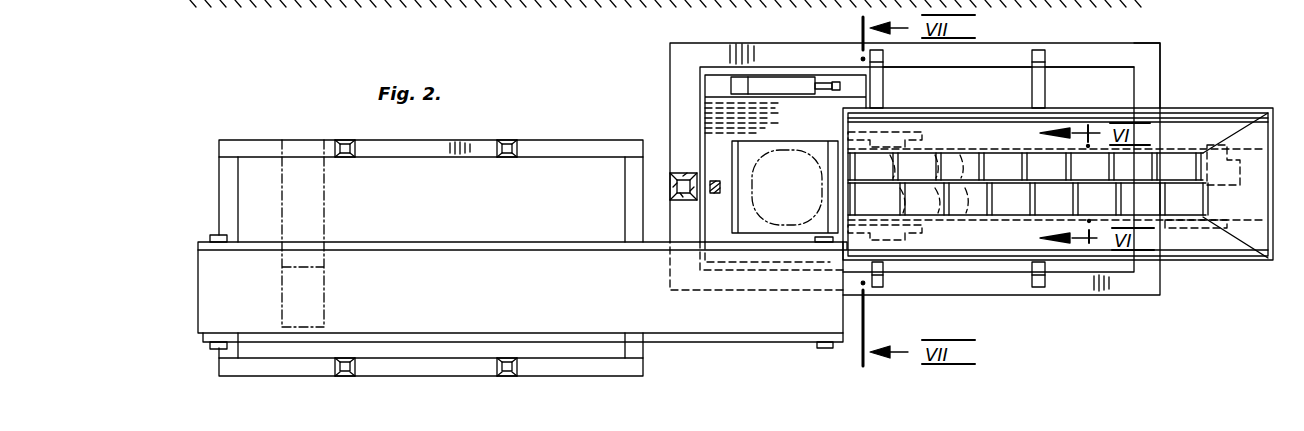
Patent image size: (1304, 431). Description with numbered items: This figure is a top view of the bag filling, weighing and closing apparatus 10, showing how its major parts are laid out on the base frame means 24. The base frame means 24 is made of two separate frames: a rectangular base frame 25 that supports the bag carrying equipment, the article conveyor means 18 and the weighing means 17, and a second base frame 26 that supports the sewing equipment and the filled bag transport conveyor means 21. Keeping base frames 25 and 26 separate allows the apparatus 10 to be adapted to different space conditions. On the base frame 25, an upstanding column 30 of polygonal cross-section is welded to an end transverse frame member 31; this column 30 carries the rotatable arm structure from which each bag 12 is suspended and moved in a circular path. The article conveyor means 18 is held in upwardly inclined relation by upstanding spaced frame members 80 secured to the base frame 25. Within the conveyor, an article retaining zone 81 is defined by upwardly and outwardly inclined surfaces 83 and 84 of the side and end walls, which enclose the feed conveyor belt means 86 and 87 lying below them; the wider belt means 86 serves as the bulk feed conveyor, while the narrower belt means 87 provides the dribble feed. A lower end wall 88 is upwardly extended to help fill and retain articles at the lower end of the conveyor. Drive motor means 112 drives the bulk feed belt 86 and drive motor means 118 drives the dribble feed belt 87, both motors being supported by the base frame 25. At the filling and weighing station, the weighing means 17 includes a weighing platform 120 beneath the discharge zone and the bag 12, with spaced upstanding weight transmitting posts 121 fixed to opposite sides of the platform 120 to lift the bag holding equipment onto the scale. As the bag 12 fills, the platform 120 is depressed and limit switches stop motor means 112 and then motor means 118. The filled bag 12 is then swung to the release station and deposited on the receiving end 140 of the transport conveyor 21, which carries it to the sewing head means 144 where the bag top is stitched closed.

The apparatus 10 is at (1228, 90).
The bag 12 is at (772, 148).
The weighing means 17 is at (794, 229).
The article conveyor means 18 is at (1078, 272).
The filled bag transport conveyor means 21 is at (522, 287).
The base frame means 24 is at (1163, 54).
The rectangular base frame 25 is at (1058, 54).
The base frame 26 is at (270, 140).
The upstanding column 30 is at (680, 173).
The end transverse frame member 31 is at (673, 110).
The upstanding spaced frame members 80 is at (884, 93).
The article retaining zone 81 is at (1245, 166).
The upwardly and outwardly inclined surface 83 is at (1195, 120).
The upwardly and outwardly inclined surface 84 is at (1177, 248).
The feed conveyor belt means 86 is at (1002, 205).
The feed conveyor belt means 87 is at (997, 165).
The lower end wall 88 is at (1267, 203).
The drive motor means 112 is at (960, 220).
The drive motor means 118 is at (965, 147).
The weighing platform 120 is at (713, 103).
The weight transmitting posts 121 is at (714, 194).
The receiving end 140 is at (807, 310).
The sewing head means 144 is at (326, 301).